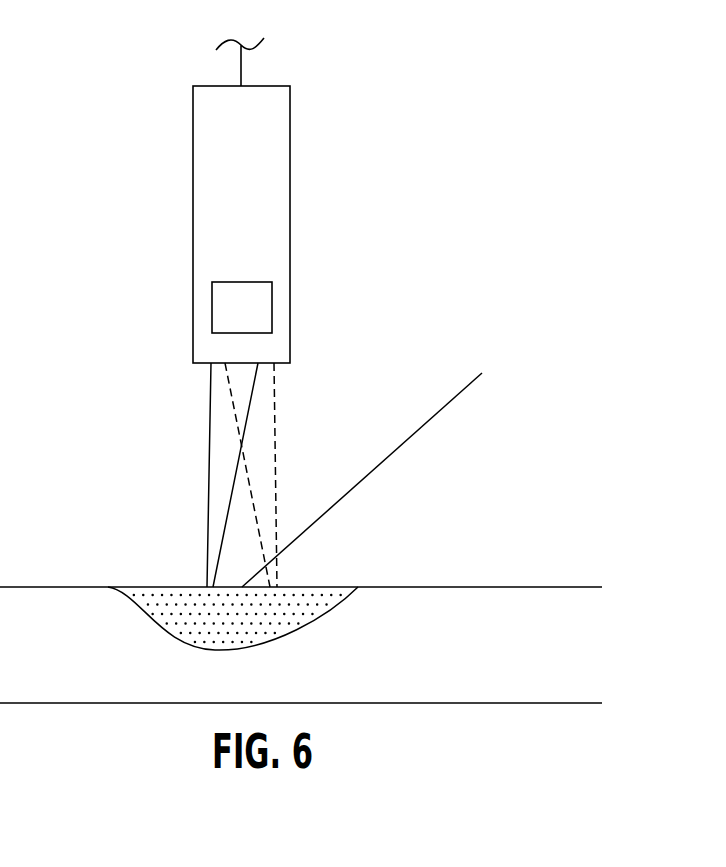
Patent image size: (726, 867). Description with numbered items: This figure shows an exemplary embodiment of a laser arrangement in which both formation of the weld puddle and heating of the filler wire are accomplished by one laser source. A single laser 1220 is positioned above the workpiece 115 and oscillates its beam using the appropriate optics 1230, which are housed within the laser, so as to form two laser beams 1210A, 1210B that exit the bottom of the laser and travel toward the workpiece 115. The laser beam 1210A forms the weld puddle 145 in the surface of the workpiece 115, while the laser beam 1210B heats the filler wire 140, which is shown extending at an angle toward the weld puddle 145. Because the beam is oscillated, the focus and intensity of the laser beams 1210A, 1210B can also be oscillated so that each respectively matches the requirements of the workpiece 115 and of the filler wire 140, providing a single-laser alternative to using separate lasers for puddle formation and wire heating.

The workpiece 115 is at (552, 587).
The weld puddle 145 is at (322, 618).
The single laser 1220 is at (193, 160).
The optics 1230 is at (272, 298).
The laser beam 1210A is at (210, 433).
The laser beam 1210B is at (275, 418).
The filler wire 140 is at (407, 443).